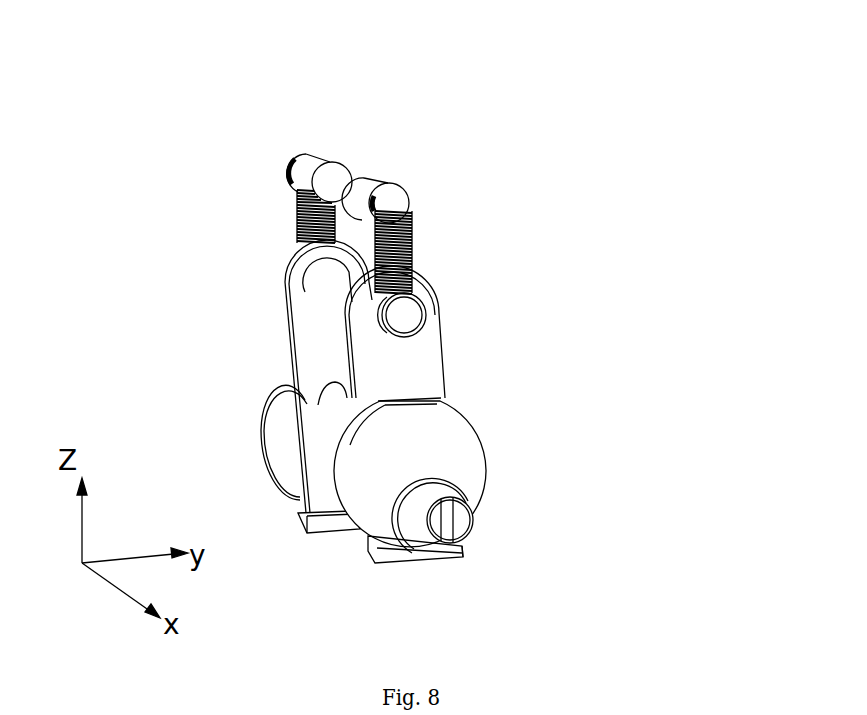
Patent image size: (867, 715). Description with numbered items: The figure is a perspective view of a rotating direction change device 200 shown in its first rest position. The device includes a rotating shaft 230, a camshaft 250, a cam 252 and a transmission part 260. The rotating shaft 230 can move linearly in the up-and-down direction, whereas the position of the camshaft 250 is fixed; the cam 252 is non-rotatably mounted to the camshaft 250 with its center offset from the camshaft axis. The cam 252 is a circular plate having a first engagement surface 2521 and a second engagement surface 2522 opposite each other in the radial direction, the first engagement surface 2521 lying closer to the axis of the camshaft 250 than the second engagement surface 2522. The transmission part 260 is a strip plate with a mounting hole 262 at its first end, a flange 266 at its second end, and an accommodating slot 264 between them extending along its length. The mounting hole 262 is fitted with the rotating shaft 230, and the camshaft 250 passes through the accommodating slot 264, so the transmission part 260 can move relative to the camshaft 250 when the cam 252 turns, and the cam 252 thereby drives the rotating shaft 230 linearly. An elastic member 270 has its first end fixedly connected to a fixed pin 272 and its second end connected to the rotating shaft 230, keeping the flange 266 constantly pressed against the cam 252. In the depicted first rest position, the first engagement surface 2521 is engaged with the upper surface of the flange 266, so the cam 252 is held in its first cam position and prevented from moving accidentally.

The rotating direction change device 200 is at (445, 38).
The pin 272 is at (405, 205).
The elastic member 270 is at (413, 260).
The rotating shaft 230 is at (407, 327).
The transmission part 260 is at (413, 360).
The second engagement surface 2522 is at (415, 398).
The cam 252 is at (448, 453).
The camshaft 250 is at (458, 518).
The first engagement surface 2521 is at (455, 556).
The mounting hole 262 is at (290, 266).
The accommodating slot 264 is at (345, 396).
The flange 266 is at (410, 557).